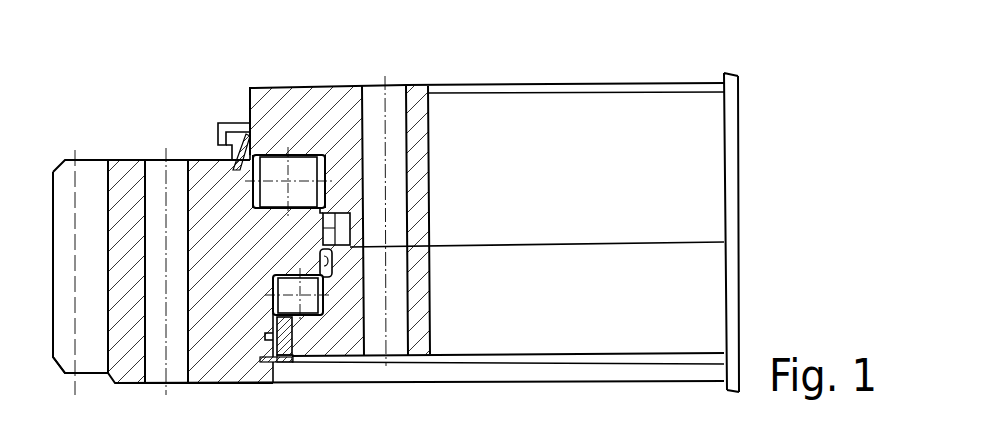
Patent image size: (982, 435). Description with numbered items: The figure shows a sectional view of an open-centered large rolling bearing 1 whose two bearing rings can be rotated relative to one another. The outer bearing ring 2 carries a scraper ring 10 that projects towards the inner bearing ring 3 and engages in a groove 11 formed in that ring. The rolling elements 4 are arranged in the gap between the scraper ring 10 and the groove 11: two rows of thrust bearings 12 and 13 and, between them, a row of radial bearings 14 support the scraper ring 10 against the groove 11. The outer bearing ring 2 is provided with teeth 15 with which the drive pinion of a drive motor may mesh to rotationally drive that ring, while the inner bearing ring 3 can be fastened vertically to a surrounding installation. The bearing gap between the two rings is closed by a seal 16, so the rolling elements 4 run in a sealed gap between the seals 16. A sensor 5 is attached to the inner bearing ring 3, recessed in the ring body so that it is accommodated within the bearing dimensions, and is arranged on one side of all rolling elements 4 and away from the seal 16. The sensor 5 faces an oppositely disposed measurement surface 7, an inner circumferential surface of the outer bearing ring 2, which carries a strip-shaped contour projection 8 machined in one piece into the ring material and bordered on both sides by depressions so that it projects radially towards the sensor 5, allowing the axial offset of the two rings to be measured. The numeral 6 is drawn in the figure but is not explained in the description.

The rolling bearing 1 is at (181, 76).
The outer bearing ring 2 is at (127, 176).
The inner bearing ring 3 is at (343, 104).
The rolling elements 4 is at (305, 160).
The sensor 5 is at (293, 340).
The raceway 6 is at (309, 325).
The measurement surface 7 is at (265, 337).
The contour projection 8 is at (261, 359).
The scraper ring 10 is at (307, 243).
The groove 11 is at (328, 270).
The first row of thrust bearings 12 is at (346, 168).
The second row of thrust bearings 13 is at (346, 291).
The row of radial bearings 14 is at (364, 230).
The teeth 15 is at (74, 364).
The seal 16 is at (232, 122).